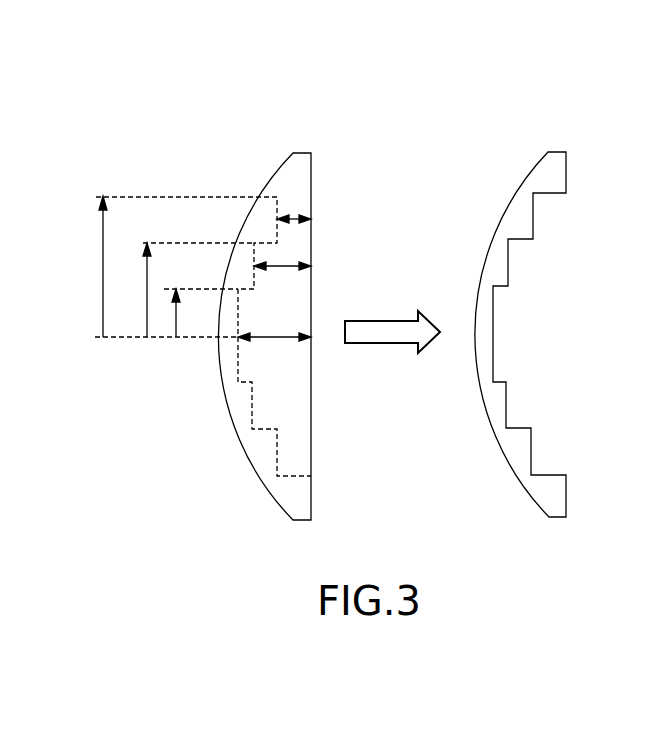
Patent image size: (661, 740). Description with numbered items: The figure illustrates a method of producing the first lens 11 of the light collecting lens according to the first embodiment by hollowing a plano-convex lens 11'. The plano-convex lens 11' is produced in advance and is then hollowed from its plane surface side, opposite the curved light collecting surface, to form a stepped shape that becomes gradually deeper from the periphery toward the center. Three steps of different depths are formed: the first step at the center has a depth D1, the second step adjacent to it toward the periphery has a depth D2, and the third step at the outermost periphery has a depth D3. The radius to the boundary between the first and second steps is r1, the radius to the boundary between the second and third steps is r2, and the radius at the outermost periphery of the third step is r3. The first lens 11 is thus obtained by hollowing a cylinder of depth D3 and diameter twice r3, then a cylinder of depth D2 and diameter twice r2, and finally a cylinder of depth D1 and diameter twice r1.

The plano-convex lens 11' is at (290, 294).
The first lens 11 is at (560, 321).
The radius to boundary between first step and second step r1 is at (186, 313).
The radius to boundary between second step and third step r2 is at (156, 290).
The radius at outermost periphery of third step r3 is at (112, 266).
The depth of first step D1 is at (274, 329).
The depth of second step D2 is at (282, 276).
The depth of third step D3 is at (294, 229).